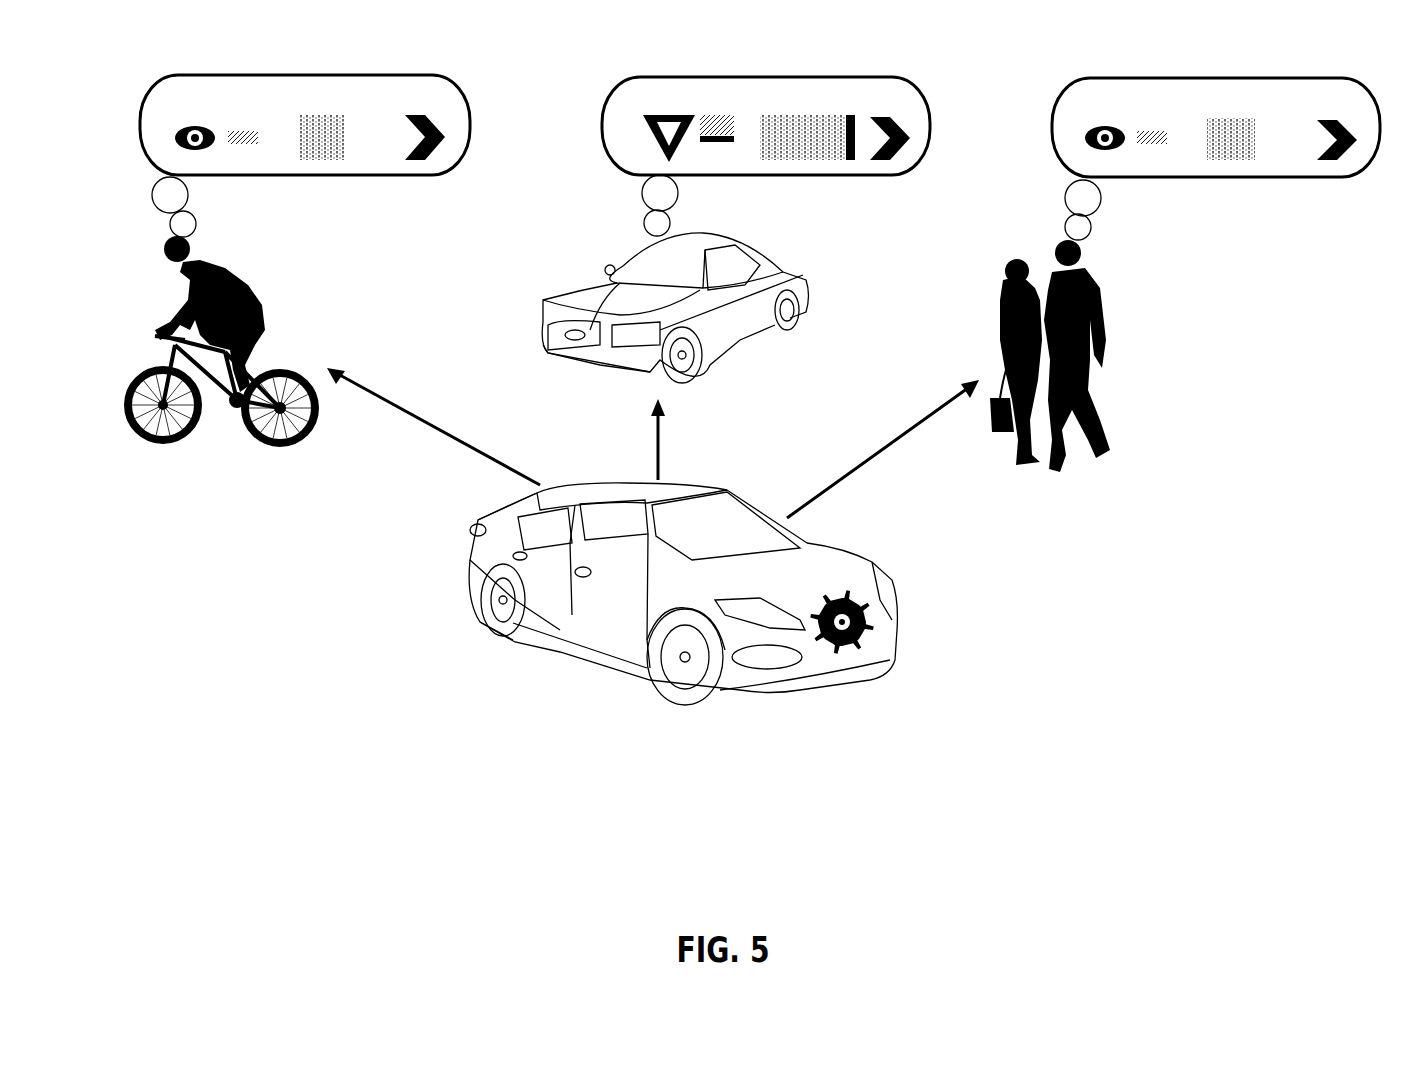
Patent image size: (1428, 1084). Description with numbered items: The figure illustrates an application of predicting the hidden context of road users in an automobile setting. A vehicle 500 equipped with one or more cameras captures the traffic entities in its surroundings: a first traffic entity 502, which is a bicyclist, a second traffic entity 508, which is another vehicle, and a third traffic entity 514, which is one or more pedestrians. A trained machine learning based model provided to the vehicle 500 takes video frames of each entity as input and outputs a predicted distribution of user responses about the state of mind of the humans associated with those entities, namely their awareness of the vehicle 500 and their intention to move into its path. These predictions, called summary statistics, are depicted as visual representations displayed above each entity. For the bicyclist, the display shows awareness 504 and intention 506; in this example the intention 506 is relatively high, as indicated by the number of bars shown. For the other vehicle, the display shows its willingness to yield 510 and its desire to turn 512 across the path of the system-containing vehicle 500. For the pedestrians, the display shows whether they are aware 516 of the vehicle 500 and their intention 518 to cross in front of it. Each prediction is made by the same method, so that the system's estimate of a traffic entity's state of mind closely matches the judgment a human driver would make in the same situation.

The vehicle 500 is at (468, 585).
The first traffic entity 502 is at (262, 330).
The awareness 504 is at (157, 115).
The intention 506 is at (455, 128).
The second traffic entity 508 is at (793, 275).
The willingness to yield 510 is at (632, 122).
The desire to turn 512 is at (908, 130).
The third traffic entity 514 is at (1112, 330).
The awareness 516 is at (1083, 92).
The intention 518 is at (1345, 102).